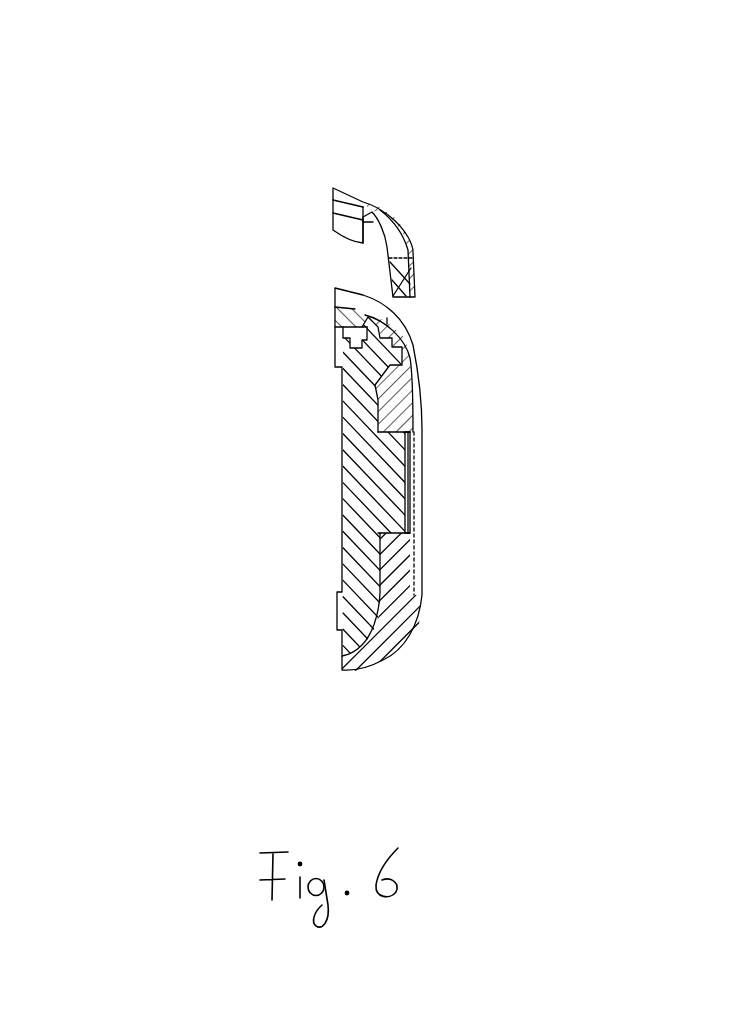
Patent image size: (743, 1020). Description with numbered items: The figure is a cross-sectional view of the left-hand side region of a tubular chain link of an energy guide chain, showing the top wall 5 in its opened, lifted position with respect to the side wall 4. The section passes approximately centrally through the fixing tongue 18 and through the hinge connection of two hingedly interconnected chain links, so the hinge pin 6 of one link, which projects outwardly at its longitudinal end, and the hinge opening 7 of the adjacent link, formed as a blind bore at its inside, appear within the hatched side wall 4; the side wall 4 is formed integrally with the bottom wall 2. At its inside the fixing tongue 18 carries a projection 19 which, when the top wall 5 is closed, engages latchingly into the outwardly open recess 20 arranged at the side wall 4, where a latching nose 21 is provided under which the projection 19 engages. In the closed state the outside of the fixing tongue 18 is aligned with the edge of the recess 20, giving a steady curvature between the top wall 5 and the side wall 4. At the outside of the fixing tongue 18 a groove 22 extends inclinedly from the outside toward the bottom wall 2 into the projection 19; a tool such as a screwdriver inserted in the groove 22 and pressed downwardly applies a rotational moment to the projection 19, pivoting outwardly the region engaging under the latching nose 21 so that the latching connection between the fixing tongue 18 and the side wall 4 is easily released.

The bottom wall 2 is at (343, 672).
The side wall 4 is at (343, 452).
The top wall 5 is at (355, 188).
The hinge pin 6 is at (392, 462).
The hinge opening 7 is at (410, 520).
The fixing tongue 18 is at (412, 242).
The projection 19 is at (283, 280).
The recess 20 is at (398, 388).
The latching nose 21 is at (400, 354).
The groove 22 is at (410, 272).